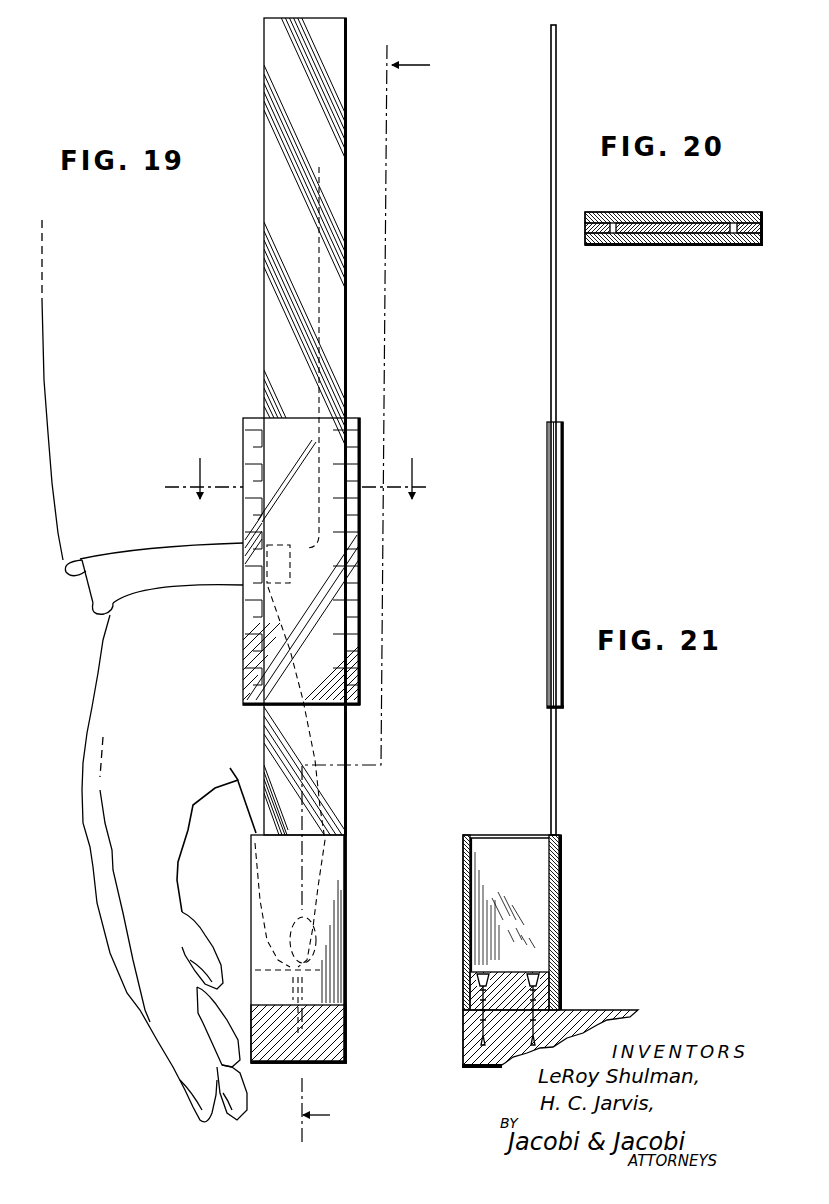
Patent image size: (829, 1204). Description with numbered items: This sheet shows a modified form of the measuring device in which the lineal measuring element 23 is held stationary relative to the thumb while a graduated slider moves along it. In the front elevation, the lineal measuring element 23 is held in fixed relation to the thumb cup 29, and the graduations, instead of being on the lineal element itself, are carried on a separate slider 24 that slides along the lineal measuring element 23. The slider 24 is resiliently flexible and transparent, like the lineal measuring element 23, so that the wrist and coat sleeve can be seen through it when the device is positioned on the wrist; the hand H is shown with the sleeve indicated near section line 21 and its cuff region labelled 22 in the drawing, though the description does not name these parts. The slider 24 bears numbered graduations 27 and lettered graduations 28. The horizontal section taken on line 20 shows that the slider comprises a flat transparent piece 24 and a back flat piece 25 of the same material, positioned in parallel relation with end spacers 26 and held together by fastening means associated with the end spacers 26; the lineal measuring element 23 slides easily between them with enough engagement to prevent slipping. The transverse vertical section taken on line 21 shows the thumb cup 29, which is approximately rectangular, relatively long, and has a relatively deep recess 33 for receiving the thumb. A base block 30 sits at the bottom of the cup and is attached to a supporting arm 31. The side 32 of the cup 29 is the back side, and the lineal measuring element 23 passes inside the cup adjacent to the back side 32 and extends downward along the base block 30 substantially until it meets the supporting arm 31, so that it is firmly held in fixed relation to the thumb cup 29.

In FIG. 19, the section line 20— 20 is at (301, 480).
In FIG. 19, the section line 21— 21 is at (47, 494).
In FIG. 19, the cuff 22 is at (95, 583).
In FIG. 19, the lineal measuring element 23 is at (276, 44).
In FIG. 20, the lineal measuring element 23 is at (700, 224).
In FIG. 21, the lineal measuring element 23 is at (558, 72).
In FIG. 19, the slider 24 is at (243, 426).
In FIG. 20, the slider 24 is at (660, 246).
In FIG. 21, the slider 24 is at (566, 446).
In FIG. 20, the back flat piece 25 is at (629, 211).
In FIG. 21, the back flat piece 25 is at (548, 457).
In FIG. 20, the end spacers 26 is at (755, 246).
In FIG. 19, the numbered graduations 27 is at (243, 517).
In FIG. 19, the lettered graduations 28 is at (317, 493).
In FIG. 19, the thumb cup 29 is at (330, 858).
In FIG. 21, the thumb cup 29 is at (466, 880).
In FIG. 21, the base block 30 is at (466, 988).
In FIG. 19, the supporting arm 31 is at (330, 1028).
In FIG. 21, the supporting arm 31 is at (580, 1016).
In FIG. 21, the back side 32 is at (563, 873).
In FIG. 21, the recess 33 is at (497, 848).
In FIG. 19, the hand H is at (84, 742).